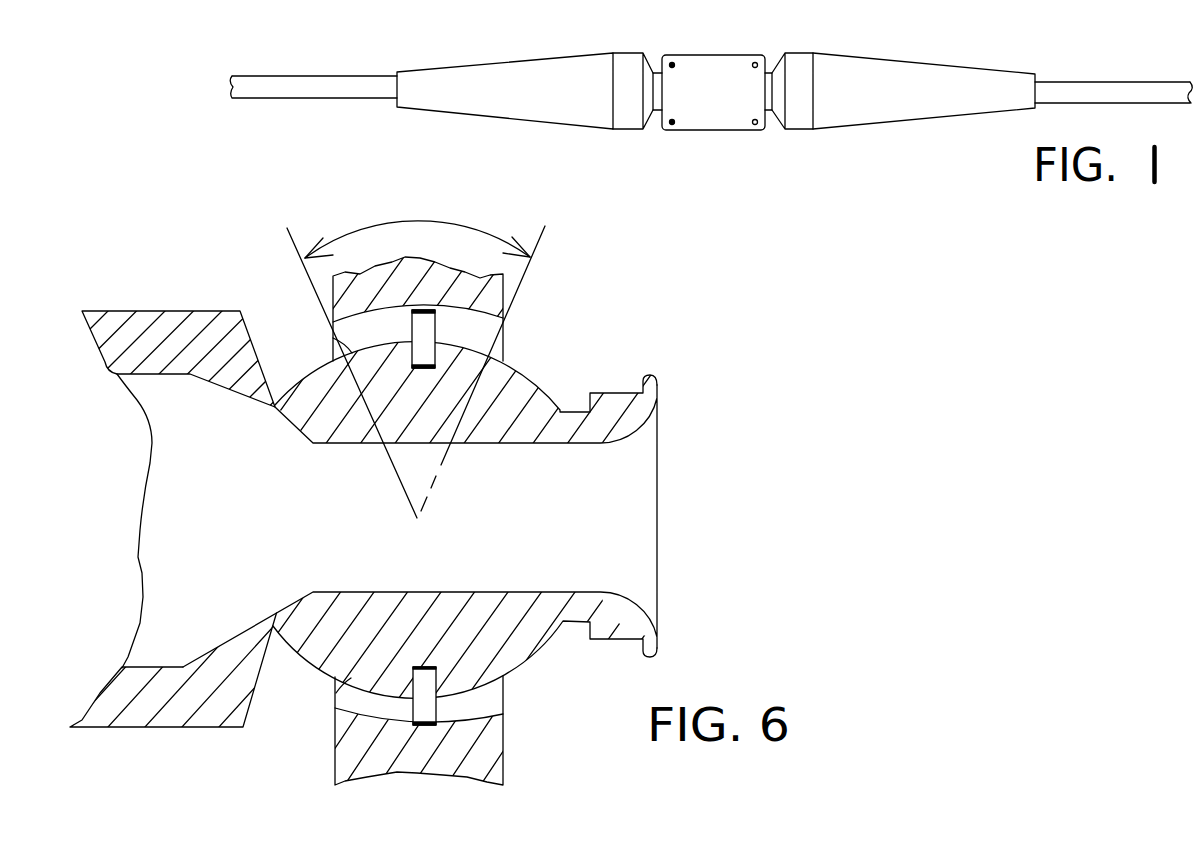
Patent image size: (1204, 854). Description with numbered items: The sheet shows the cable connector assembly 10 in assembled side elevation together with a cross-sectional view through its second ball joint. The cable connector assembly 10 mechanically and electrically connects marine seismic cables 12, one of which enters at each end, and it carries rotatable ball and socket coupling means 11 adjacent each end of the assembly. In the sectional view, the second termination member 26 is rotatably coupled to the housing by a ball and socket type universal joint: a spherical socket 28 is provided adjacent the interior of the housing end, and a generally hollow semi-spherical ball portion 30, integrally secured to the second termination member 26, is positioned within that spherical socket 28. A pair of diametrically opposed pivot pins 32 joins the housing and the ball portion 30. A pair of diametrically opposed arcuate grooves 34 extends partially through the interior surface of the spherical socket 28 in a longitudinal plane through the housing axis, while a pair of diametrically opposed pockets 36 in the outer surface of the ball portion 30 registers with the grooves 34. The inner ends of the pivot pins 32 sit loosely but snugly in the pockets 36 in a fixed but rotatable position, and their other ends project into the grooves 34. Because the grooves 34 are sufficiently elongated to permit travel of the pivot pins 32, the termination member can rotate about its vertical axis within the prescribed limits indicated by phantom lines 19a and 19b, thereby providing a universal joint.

In FIG. 1, the cable connector assembly 10 is at (707, 54).
In FIG. 1, the rotatable ball and socket coupling means 11 is at (655, 112).
In FIG. 1, the marine seismic cable 12 is at (285, 75).
In FIG. 6, the phantom line 19a is at (300, 258).
In FIG. 6, the phantom line 19b is at (540, 255).
In FIG. 6, the second termination member 26 is at (250, 700).
In FIG. 6, the spherical socket 28 is at (333, 338).
In FIG. 6, the ball portion 30 is at (500, 365).
In FIG. 6, the pivot pin 32 is at (423, 327).
In FIG. 6, the arcuate groove 34 is at (483, 336).
In FIG. 6, the pocket 36 is at (424, 372).